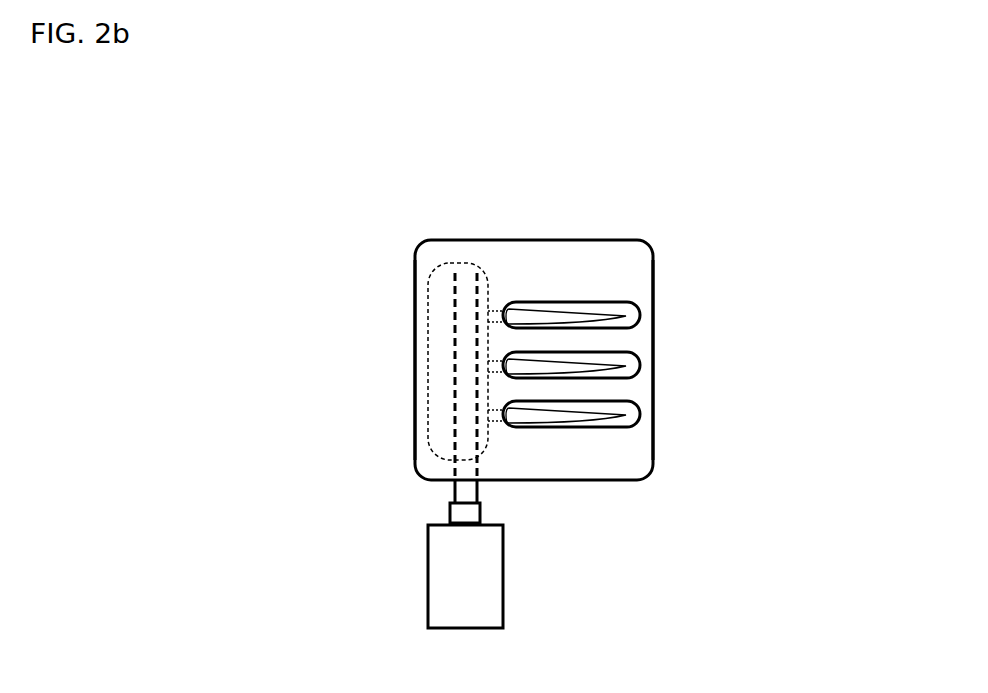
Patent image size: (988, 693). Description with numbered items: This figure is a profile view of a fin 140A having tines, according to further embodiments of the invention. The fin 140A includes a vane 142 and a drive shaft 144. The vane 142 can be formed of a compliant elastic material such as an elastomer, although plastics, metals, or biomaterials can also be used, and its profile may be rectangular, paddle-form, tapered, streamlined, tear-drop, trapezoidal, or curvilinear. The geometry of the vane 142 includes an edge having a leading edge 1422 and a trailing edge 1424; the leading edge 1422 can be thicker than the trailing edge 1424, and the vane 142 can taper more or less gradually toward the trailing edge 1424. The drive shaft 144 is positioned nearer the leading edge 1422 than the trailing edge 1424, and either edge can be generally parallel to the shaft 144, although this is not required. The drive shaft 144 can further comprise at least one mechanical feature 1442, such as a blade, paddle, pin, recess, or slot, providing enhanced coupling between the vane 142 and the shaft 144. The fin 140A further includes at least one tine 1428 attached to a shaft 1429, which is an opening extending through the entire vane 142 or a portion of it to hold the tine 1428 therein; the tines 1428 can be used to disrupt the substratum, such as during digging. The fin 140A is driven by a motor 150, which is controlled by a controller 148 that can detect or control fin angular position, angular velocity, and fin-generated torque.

The fin 140A is at (536, 291).
The vane 142 is at (565, 270).
The leading edge 1422 is at (415, 402).
The trailing edge 1424 is at (655, 285).
The mechanical feature 1442 is at (423, 330).
The drive shaft 144 is at (465, 275).
The shaft 1429 is at (632, 400).
The tine 1428 is at (580, 415).
The controller 148 is at (484, 511).
The motor 150 is at (435, 571).